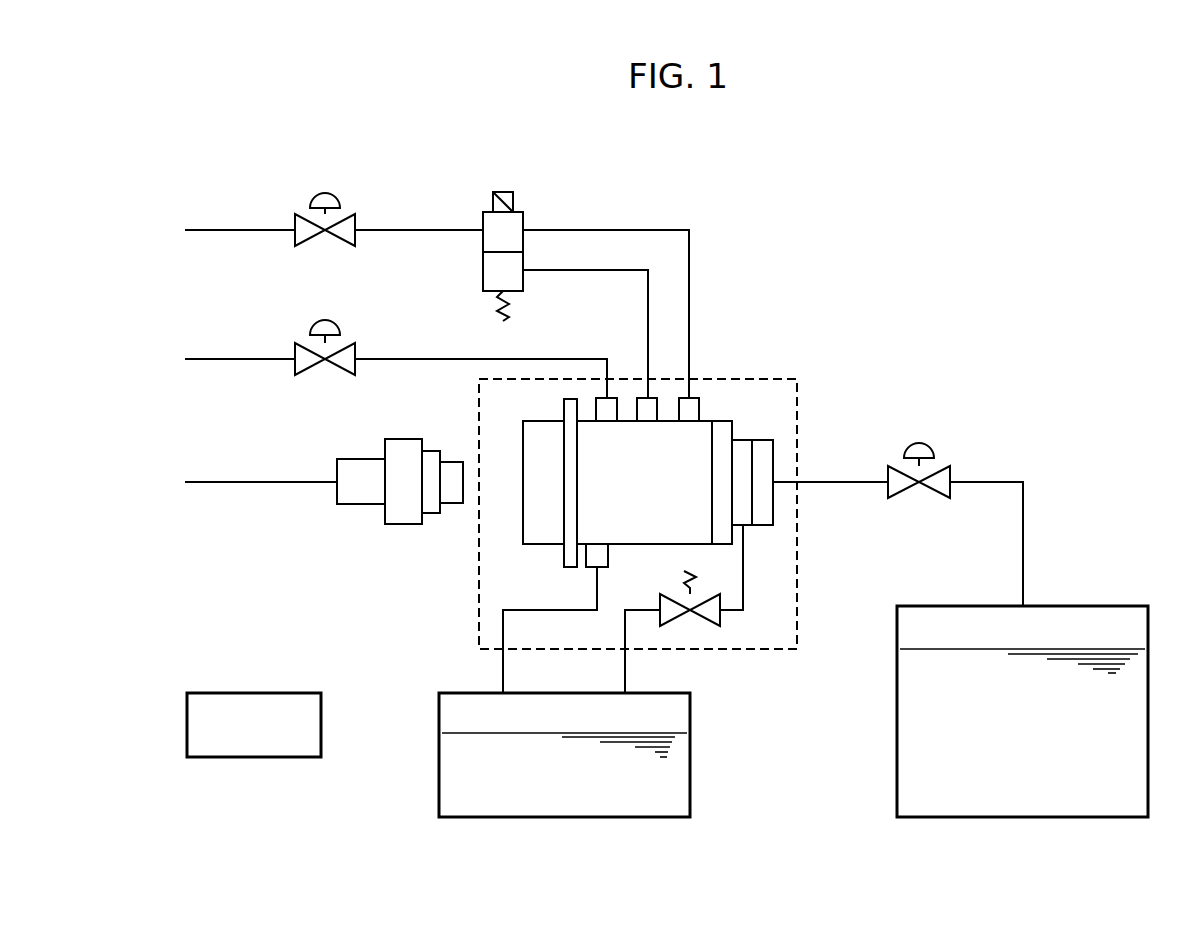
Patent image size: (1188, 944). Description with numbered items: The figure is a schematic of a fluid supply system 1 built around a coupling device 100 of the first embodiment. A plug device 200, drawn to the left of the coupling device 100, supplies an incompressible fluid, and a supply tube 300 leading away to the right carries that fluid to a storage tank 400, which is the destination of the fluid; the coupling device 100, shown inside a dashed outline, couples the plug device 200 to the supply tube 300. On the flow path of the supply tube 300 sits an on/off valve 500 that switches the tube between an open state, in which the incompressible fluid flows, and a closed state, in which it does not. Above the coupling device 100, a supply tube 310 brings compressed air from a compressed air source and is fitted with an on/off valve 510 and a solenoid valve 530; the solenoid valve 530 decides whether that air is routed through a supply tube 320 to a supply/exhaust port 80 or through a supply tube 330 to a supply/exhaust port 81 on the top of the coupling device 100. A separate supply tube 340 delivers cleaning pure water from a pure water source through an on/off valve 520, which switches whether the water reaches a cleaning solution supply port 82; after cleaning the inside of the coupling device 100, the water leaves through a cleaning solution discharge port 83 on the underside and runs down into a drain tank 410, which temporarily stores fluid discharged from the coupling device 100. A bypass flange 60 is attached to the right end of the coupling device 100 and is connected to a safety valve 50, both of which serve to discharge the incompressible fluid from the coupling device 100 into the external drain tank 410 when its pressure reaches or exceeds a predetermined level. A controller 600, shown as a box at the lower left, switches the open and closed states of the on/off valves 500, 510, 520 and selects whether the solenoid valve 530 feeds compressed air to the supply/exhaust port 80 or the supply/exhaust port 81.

The fluid supply system 1 is at (970, 252).
The safety valve 50 is at (707, 626).
The bypass flange 60 is at (742, 438).
The supply/exhaust port 80 is at (659, 408).
The supply/exhaust port 81 is at (704, 404).
The cleaning solution supply port 82 is at (618, 408).
The cleaning solution discharge port 83 is at (609, 556).
The coupling device 100 is at (799, 394).
The plug device 200 is at (401, 525).
The supply tube 300 is at (843, 484).
The supply tube 310 is at (232, 232).
The supply tube 320 is at (572, 272).
The supply tube 330 is at (643, 230).
The supply tube 340 is at (233, 362).
The storage tank 400 is at (1073, 606).
The drain tank 410 is at (691, 765).
The on/off valve 500 is at (930, 444).
The on/off valve 510 is at (333, 193).
The on/off valve 520 is at (335, 322).
The solenoid valve 530 is at (516, 199).
The controller 600 is at (322, 720).